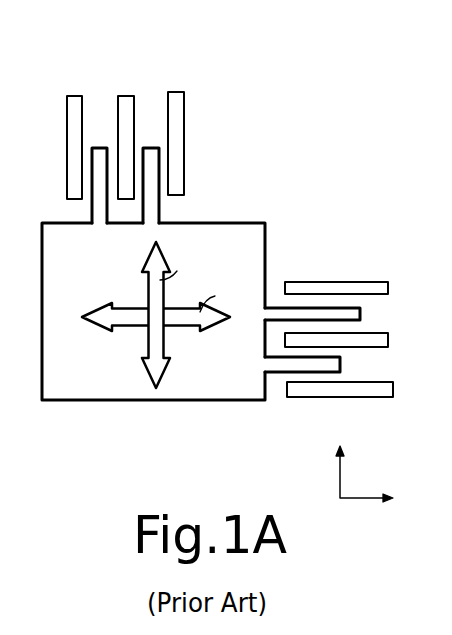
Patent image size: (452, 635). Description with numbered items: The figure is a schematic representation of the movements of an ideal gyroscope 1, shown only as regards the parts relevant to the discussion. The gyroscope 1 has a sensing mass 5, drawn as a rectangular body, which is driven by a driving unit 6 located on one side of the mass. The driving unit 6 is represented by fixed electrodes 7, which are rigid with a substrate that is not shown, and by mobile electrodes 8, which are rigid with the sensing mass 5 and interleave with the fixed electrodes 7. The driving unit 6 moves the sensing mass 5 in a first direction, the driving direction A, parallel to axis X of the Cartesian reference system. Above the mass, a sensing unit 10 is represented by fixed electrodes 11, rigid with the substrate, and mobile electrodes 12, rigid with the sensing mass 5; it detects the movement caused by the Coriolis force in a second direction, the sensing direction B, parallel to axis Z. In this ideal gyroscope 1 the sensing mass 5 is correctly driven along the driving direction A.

The ideal gyroscope 1 is at (344, 152).
The sensing mass 5 is at (255, 222).
The driving unit 6 is at (393, 272).
The fixed electrodes 7 is at (368, 288).
The mobile electrodes 8 is at (273, 363).
The sensing unit 10 is at (206, 152).
The fixed electrodes 11 is at (168, 107).
The mobile electrodes 12 is at (150, 217).